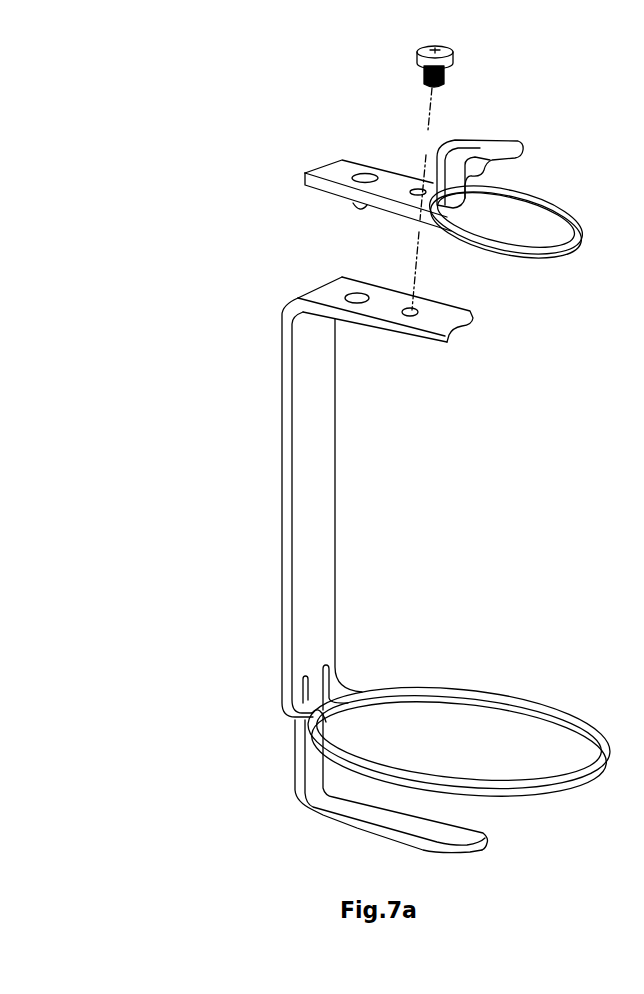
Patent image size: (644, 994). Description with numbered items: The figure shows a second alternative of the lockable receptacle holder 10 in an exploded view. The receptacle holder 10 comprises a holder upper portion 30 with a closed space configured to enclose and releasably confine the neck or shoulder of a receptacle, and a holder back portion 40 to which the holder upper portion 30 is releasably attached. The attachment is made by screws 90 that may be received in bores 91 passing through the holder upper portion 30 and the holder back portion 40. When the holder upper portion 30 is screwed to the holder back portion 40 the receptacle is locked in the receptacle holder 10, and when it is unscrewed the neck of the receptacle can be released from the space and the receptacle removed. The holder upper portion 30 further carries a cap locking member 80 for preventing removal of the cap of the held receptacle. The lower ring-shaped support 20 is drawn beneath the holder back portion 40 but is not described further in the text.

The lockable receptacle holder 10 is at (218, 142).
The ring support 20 is at (343, 827).
The holder upper portion 30 is at (340, 157).
The holder back portion 40 is at (280, 440).
The cap locking member 80 is at (493, 130).
The screws 90 is at (443, 75).
The bores 91 is at (420, 305).